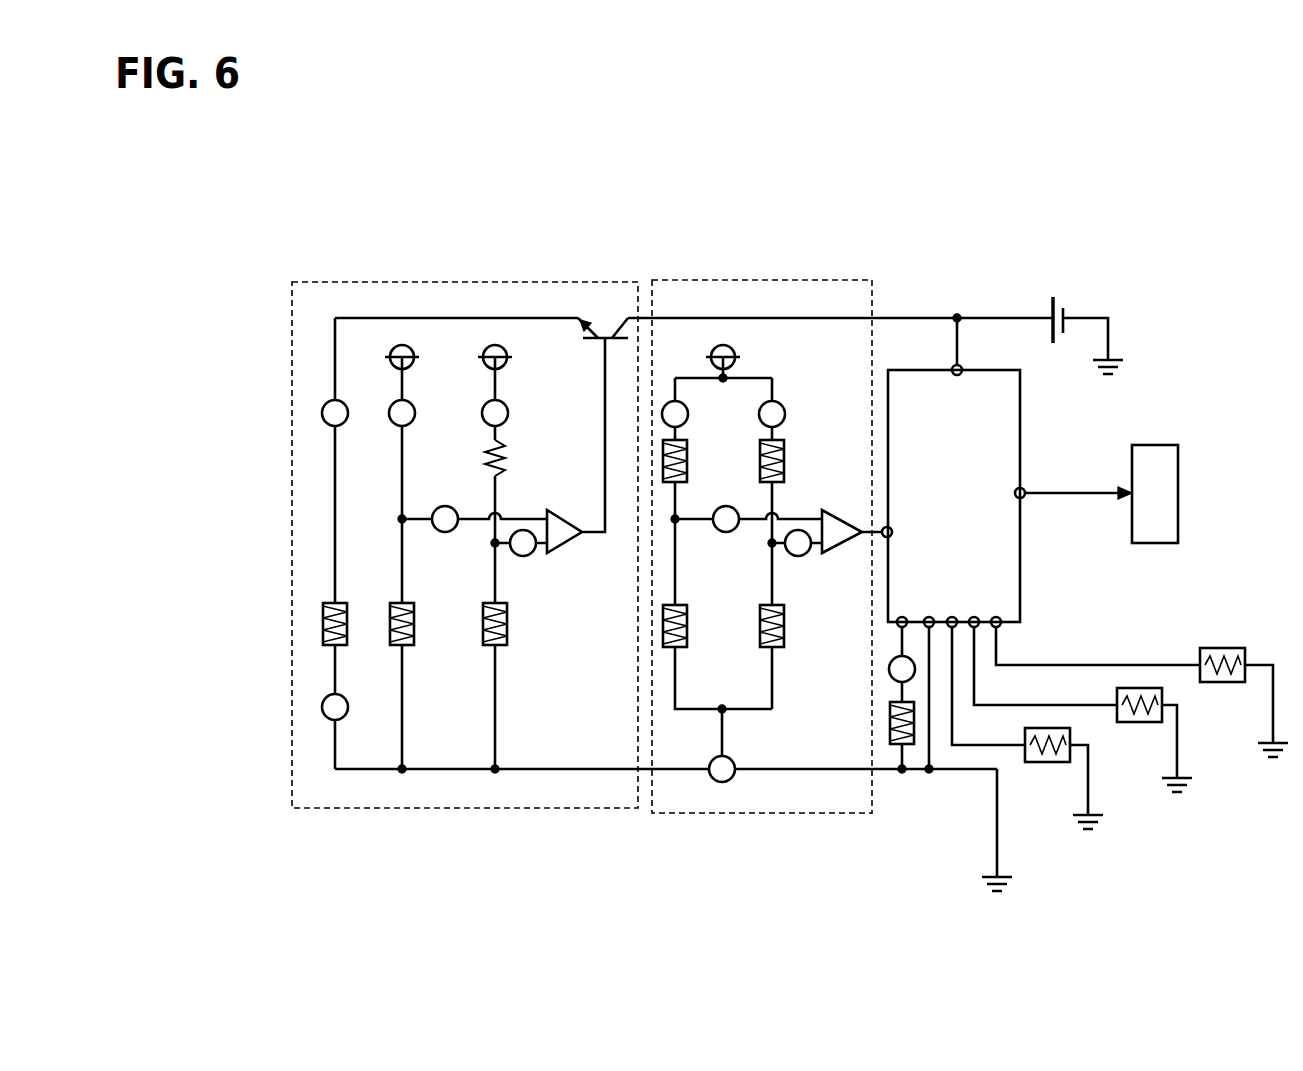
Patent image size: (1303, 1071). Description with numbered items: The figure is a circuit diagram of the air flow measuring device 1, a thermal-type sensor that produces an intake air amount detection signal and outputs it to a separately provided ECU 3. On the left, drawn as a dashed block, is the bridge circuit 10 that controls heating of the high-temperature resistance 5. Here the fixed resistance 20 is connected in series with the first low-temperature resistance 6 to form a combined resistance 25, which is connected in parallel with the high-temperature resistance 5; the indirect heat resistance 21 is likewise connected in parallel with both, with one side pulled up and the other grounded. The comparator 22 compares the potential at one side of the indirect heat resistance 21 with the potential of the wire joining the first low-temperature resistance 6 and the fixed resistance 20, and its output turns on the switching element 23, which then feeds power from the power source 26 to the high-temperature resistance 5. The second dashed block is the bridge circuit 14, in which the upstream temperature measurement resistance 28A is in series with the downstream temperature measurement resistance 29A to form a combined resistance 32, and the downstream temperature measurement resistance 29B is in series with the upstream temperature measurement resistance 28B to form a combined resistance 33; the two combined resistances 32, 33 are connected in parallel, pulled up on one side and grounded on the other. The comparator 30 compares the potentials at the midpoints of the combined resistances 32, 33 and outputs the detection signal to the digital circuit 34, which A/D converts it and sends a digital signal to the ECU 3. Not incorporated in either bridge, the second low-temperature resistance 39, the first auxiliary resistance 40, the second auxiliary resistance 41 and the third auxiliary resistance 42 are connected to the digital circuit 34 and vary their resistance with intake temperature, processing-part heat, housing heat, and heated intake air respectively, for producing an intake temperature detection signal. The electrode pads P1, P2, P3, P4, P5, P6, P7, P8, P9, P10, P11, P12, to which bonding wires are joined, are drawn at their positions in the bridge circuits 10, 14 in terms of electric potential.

The air flow measuring device 1 is at (215, 228).
The electronic control unit (ECU) 3 is at (1178, 490).
The high-temperature resistance 5 is at (342, 603).
The first low-temperature resistance 6 is at (483, 625).
The bridge circuit 10 is at (330, 281).
The bridge circuit 14 is at (820, 281).
The fixed resistance 20 is at (500, 446).
The indirect heat resistance 21 is at (409, 603).
The comparator 22 is at (563, 537).
The switching element 23 is at (588, 320).
The combined resistance 25 is at (502, 692).
The power source 26 is at (1052, 308).
The upstream temperature measurement resistance 28A is at (689, 444).
The upstream temperature measurement resistance 28B is at (756, 628).
The downstream temperature measurement resistance 29A is at (678, 603).
The downstream temperature measurement resistance 29B is at (786, 444).
The comparator 30 is at (832, 525).
The combined resistance 32 is at (668, 683).
The combined resistance 33 is at (775, 665).
The digital circuit 34 is at (1025, 435).
The second low-temperature resistance 39 is at (914, 724).
The first auxiliary resistance 40 is at (1071, 735).
The second auxiliary resistance 41 is at (1163, 695).
The third auxiliary resistance 42 is at (1245, 655).
The electrode pad P1 is at (672, 401).
The electrode pad P2 is at (526, 557).
The electrode pad P3 is at (503, 407).
The electrode pad P4 is at (890, 668).
The electrode pad P5 is at (723, 783).
The electrode pad P6 is at (344, 708).
The electrode pad P7 is at (346, 414).
The electrode pad P8 is at (406, 412).
The electrode pad P9 is at (445, 506).
The electrode pad P10 is at (724, 505).
The electrode pad P11 is at (779, 402).
The electrode pad P12 is at (804, 556).